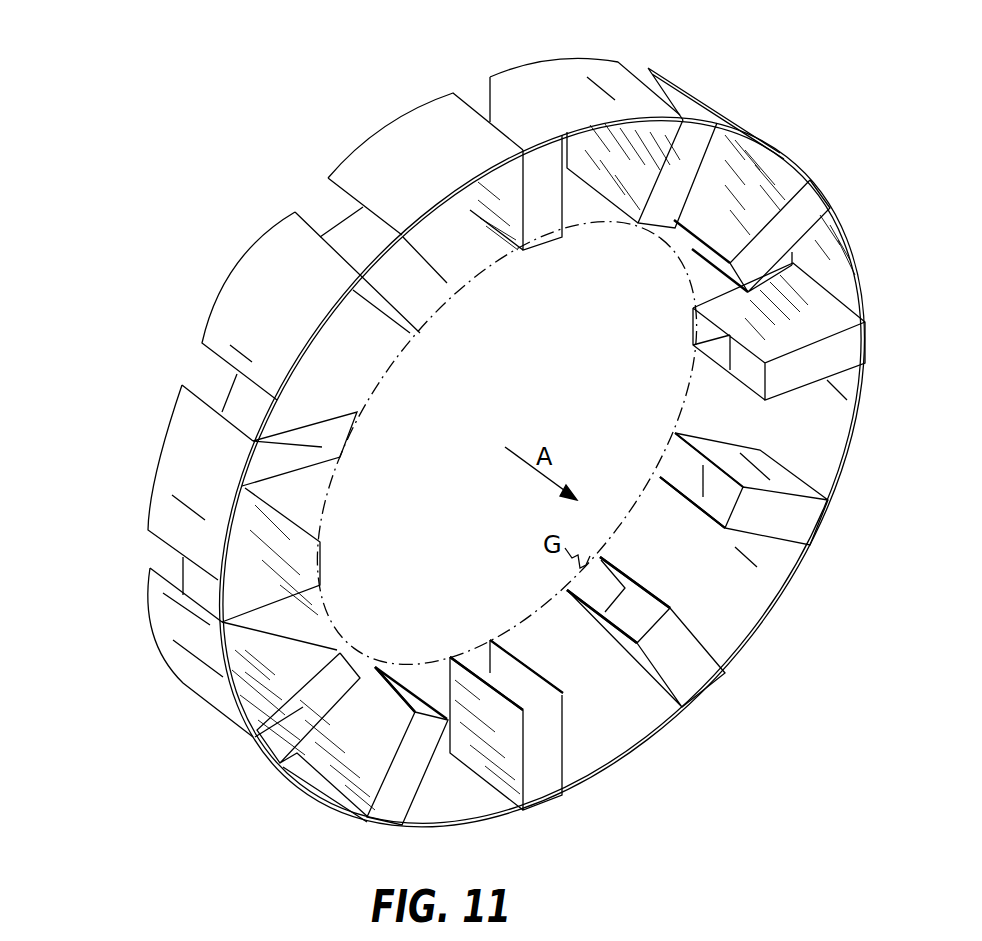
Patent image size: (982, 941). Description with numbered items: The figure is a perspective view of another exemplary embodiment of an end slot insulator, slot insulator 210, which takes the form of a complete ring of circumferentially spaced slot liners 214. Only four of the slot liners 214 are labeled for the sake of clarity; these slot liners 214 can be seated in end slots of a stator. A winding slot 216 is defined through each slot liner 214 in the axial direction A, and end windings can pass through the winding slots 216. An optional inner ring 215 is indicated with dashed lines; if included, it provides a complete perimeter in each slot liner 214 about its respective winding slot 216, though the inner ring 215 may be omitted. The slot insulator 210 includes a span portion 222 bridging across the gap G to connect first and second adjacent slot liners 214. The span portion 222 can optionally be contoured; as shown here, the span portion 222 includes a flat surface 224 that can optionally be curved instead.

The slot insulator 210 is at (121, 503).
The slot liner 214 is at (455, 205).
The inner ring 215 is at (680, 405).
The winding slot 216 is at (440, 262).
The span portion 222 is at (332, 237).
The flat surface 224 is at (572, 208).